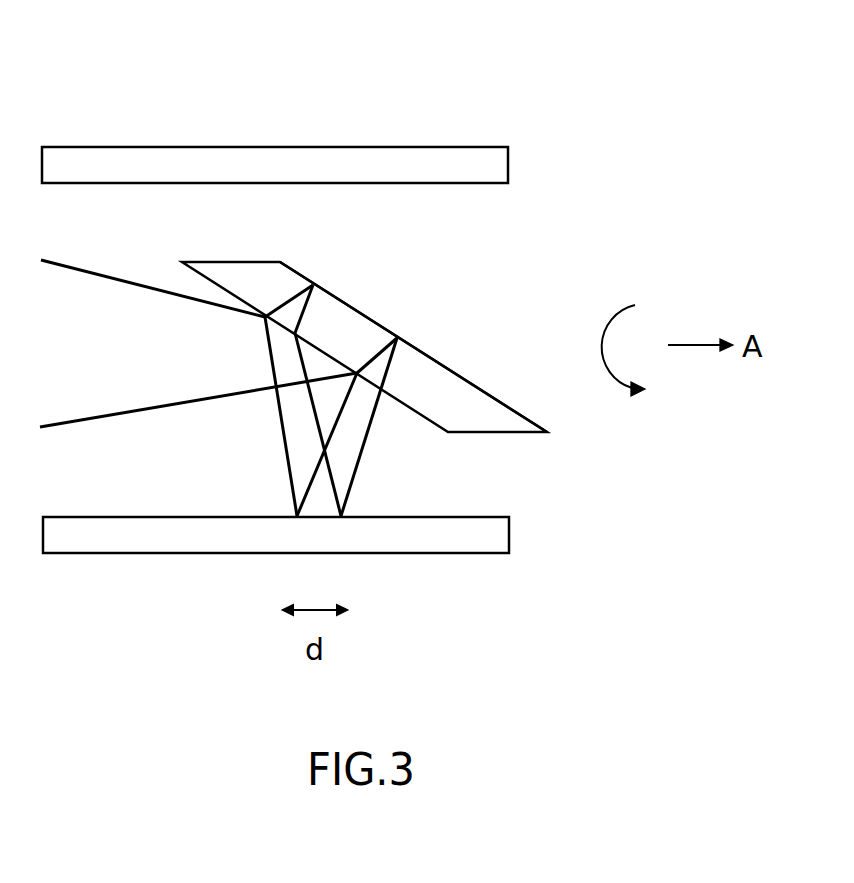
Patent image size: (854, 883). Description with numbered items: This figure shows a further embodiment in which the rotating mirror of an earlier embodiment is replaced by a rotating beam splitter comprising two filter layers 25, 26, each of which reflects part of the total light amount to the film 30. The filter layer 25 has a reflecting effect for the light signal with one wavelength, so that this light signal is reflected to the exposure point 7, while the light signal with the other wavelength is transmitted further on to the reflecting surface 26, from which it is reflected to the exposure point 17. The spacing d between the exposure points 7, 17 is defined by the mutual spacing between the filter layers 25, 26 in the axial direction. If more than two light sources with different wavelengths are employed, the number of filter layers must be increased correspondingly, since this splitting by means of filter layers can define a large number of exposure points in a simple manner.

The film 30 is at (70, 147).
The filter layer 25 is at (207, 280).
The reflecting surface 26 is at (507, 404).
The exposure point 7 is at (292, 516).
The exposure point 17 is at (343, 517).